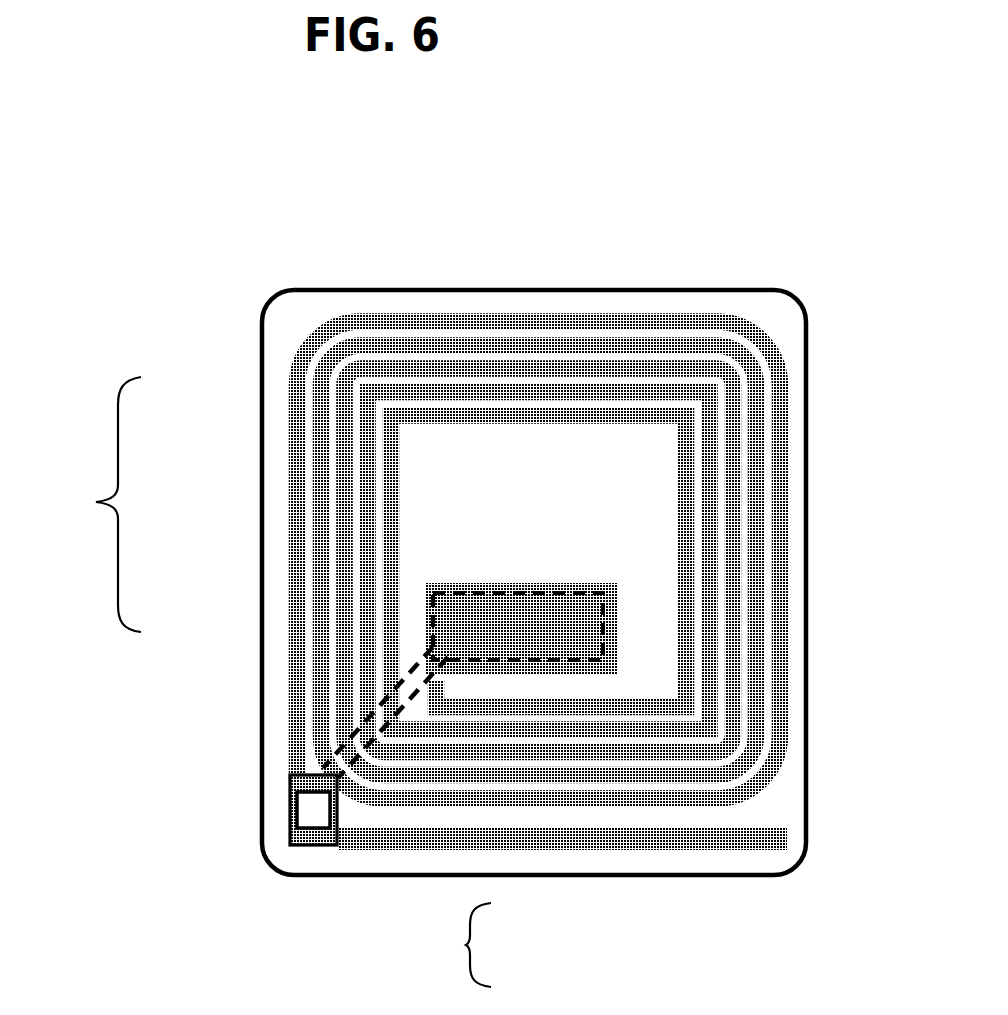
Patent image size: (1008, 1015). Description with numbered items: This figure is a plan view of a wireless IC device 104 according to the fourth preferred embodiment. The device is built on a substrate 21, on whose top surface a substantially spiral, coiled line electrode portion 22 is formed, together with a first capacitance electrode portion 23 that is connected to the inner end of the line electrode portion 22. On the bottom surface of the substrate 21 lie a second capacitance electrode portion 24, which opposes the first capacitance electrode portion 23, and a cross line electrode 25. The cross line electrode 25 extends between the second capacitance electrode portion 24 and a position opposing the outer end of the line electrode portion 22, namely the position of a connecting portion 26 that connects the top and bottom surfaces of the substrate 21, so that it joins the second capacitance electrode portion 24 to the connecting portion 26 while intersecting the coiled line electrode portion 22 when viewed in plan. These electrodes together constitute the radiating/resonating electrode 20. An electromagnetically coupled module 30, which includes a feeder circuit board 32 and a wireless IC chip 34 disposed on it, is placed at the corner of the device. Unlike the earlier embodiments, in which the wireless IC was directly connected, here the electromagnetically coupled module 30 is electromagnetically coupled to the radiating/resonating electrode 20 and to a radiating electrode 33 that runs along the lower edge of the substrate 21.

The wireless IC device 104 is at (740, 172).
The substrate 21 is at (798, 302).
The radiating/resonating electrode 20 is at (89, 504).
The line electrode portion 22 is at (294, 434).
The first capacitance electrode portion 23 is at (516, 582).
The second capacitance electrode portion 24 is at (433, 593).
The cross line electrode 25 is at (394, 690).
The connecting portion 26 is at (292, 777).
The electromagnetically coupled module 30 is at (513, 945).
The feeder circuit board 32 is at (313, 837).
The radiating electrode 33 is at (632, 848).
The wireless IC chip 34 is at (318, 810).